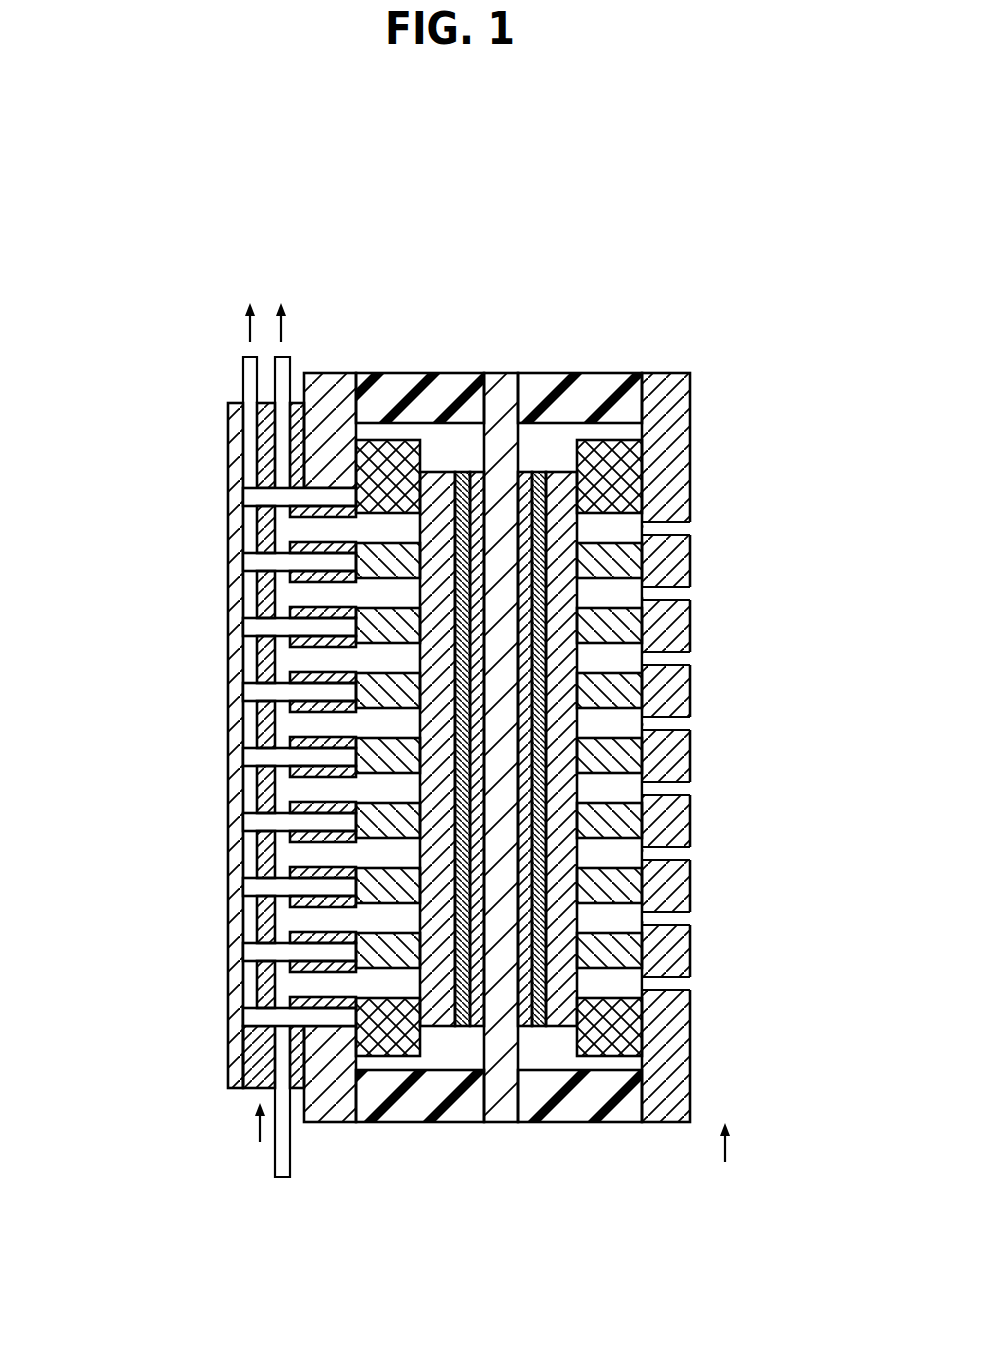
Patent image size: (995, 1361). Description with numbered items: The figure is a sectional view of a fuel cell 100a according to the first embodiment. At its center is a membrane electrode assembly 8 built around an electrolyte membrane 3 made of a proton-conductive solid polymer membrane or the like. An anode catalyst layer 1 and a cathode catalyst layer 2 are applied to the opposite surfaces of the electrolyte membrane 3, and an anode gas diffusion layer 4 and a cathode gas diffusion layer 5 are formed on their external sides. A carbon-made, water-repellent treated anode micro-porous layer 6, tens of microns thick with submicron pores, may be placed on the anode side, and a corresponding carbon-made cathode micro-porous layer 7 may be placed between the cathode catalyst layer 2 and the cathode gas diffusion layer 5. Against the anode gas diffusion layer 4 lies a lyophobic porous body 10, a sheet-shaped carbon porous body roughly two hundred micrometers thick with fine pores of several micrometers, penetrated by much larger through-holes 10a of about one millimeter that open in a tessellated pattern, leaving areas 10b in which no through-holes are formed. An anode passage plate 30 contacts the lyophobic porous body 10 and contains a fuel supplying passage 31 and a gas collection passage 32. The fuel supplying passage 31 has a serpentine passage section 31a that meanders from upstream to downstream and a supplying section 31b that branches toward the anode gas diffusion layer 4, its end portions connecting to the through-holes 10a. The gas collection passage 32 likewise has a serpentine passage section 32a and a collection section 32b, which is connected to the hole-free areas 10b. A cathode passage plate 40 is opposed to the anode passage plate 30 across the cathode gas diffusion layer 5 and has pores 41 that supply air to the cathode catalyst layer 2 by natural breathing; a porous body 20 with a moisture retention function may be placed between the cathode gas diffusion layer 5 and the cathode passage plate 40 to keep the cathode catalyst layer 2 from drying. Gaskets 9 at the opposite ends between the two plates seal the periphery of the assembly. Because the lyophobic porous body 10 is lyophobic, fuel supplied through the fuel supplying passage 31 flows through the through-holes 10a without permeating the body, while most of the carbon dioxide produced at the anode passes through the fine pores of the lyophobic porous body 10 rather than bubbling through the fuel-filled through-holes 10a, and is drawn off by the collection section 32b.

The fuel cell 100a is at (236, 268).
The anode catalyst layer 1 is at (479, 1028).
The cathode catalyst layer 2 is at (531, 1028).
The electrolyte membrane 3 is at (500, 1110).
The anode gas diffusion layer 4 is at (441, 1028).
The cathode gas diffusion layer 5 is at (569, 1028).
The anode micro-porous layer 6 is at (453, 472).
The cathode micro-porous layer 7 is at (527, 472).
The membrane electrode assembly 8 is at (428, 1217).
The gaskets 9 is at (577, 372).
The lyophobic porous body 10 is at (378, 440).
The through-holes 10a is at (386, 1000).
The areas 10b is at (333, 1027).
The porous body 20 is at (620, 440).
The anode passage plate 30 is at (322, 372).
The fuel supplying passage 31 is at (120, 905).
The serpentine passage section 31a is at (300, 988).
The supplying section 31b is at (265, 942).
The gas collection passage 32 is at (92, 765).
The serpentine passage section 32a is at (246, 852).
The collection section 32b is at (272, 822).
The cathode passage plate 40 is at (677, 372).
The pores 41 is at (682, 985).